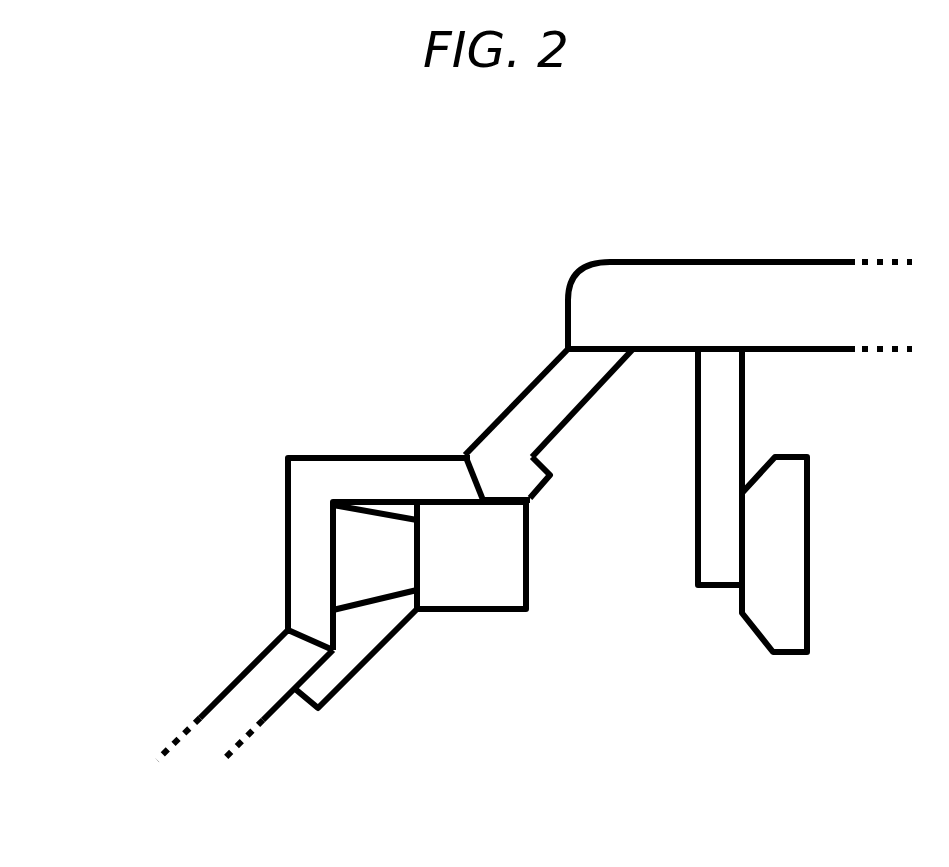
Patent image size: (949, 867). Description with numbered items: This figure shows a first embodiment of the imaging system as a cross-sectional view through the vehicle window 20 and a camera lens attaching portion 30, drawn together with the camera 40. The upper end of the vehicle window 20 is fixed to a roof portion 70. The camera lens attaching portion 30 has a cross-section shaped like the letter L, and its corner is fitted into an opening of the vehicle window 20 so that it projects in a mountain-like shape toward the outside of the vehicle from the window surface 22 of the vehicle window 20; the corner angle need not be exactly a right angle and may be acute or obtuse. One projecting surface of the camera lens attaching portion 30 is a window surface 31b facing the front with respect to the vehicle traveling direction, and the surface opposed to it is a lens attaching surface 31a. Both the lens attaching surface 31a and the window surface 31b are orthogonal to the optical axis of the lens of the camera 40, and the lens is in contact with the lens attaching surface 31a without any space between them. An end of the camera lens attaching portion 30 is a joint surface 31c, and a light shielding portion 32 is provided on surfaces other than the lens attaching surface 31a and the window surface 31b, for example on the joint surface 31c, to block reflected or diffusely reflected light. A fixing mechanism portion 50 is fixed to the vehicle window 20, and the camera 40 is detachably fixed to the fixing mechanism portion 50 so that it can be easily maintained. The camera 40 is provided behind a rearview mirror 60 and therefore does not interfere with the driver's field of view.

The vehicle window 20 is at (275, 735).
The window surface 22 is at (200, 718).
The camera lens attaching portion 30 is at (330, 413).
The lens attaching surface 31a is at (333, 630).
The window surface 31b is at (285, 478).
The joint surface 31c is at (470, 482).
The light shielding portion 32 is at (463, 455).
The camera 40 is at (507, 613).
The fixing mechanism portion 50 is at (547, 487).
The rearview mirror 60 is at (777, 657).
The roof portion 70 is at (683, 262).